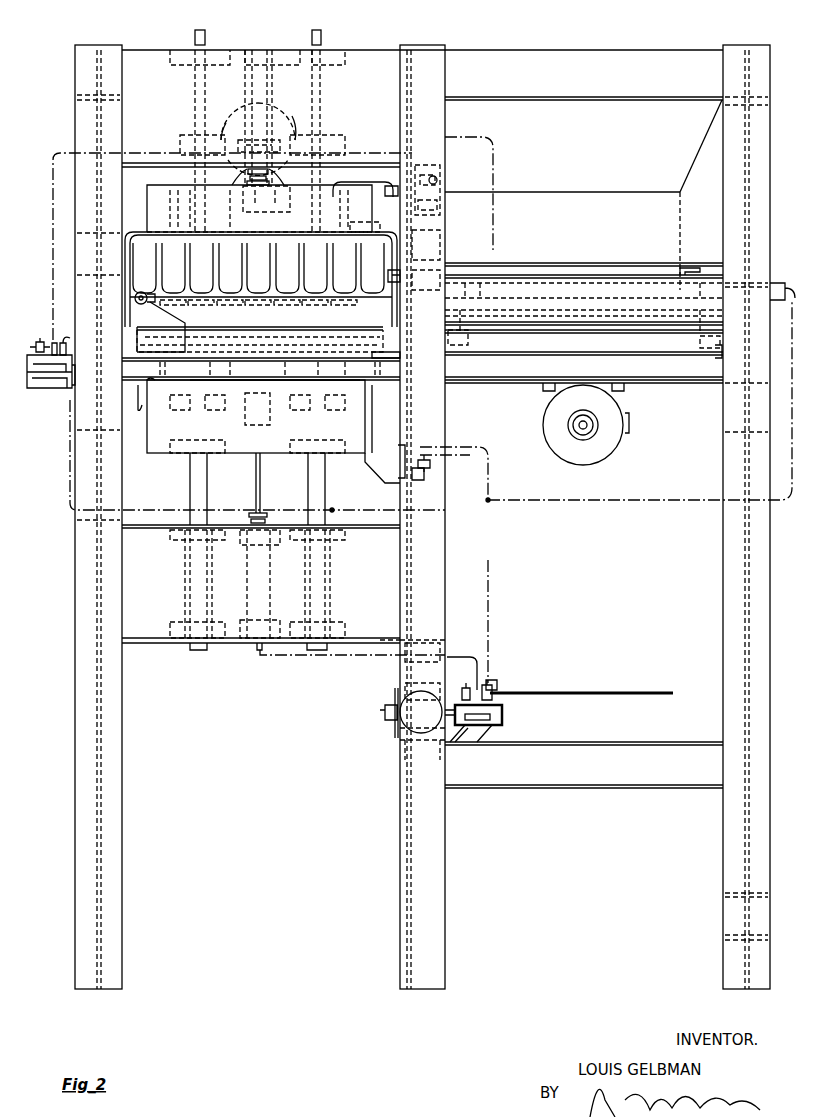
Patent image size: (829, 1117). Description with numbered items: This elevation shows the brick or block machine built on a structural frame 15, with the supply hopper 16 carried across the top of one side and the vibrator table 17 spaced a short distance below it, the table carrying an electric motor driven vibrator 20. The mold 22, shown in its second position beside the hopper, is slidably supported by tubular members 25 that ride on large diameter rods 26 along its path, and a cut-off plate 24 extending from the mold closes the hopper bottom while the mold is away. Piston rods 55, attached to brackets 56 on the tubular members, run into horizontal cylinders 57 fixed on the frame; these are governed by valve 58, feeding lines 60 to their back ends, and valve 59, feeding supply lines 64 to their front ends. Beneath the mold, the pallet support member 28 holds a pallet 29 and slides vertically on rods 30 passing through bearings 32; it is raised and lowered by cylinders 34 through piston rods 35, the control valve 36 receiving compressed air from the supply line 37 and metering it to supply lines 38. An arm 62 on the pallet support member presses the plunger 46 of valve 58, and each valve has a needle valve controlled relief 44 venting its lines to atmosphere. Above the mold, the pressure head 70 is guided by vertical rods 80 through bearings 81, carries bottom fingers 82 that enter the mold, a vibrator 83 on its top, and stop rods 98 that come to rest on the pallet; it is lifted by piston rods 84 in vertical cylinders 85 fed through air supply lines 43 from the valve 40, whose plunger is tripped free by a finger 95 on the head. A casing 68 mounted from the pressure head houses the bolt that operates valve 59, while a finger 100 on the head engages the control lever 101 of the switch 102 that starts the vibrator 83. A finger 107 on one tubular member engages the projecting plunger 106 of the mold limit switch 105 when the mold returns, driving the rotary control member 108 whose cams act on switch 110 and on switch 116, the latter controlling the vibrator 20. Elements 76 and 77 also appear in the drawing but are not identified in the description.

The structural frame 15 is at (148, 44).
The supply hopper 16 is at (698, 170).
The vibrator table 17 is at (637, 385).
The electric motor driven vibrator 20 is at (603, 455).
The mold 22 is at (248, 368).
The cut-off plate 24 is at (540, 344).
The tubular members 25 is at (250, 332).
The large diameter rods 26 is at (290, 310).
The pallet support member 28 is at (158, 455).
The pallet 29 is at (190, 384).
The vertical rods 30 is at (205, 472).
The vertical bearings 32 is at (185, 572).
The cylinders 34 is at (247, 583).
The piston rods 35 is at (261, 495).
The control valve 36 is at (504, 715).
The compressed air supply line 37 is at (355, 175).
The supply lines 38 is at (340, 658).
The valve 40 is at (25, 355).
The air supply lines 43 is at (55, 153).
The needle valve controlled relief 44 is at (38, 338).
The plunger 46 is at (408, 530).
The piston rods 55 is at (218, 303).
The brackets 56 is at (170, 310).
The horizontal cylinders 57 is at (540, 280).
The valve 58 is at (430, 495).
The valve 59 is at (408, 130).
The lines 60 is at (618, 500).
The arm 62 is at (378, 478).
The supply lines 64 is at (480, 137).
The casing 68 is at (445, 220).
The pressure head 70 is at (158, 190).
The guide 76 is at (470, 340).
The bracket 77 is at (190, 342).
The vertical rods 80 is at (195, 80).
The bearings 81 is at (195, 96).
The bottom fingers 82 is at (190, 280).
The electric motor driven vibrator 83 is at (238, 112).
The piston rods 84 is at (275, 198).
The vertical cylinders 85 is at (272, 100).
The finger 95 is at (78, 252).
The stop rods 98 is at (130, 280).
The finger 100 is at (378, 232).
The control lever 101 is at (388, 277).
The switch 102 is at (435, 268).
The mold limit switch 105 is at (708, 348).
The projecting plunger 106 is at (720, 342).
The finger 107 is at (378, 352).
The rotary control member 108 is at (400, 738).
The switch 110 is at (385, 712).
The switch 116 is at (405, 662).